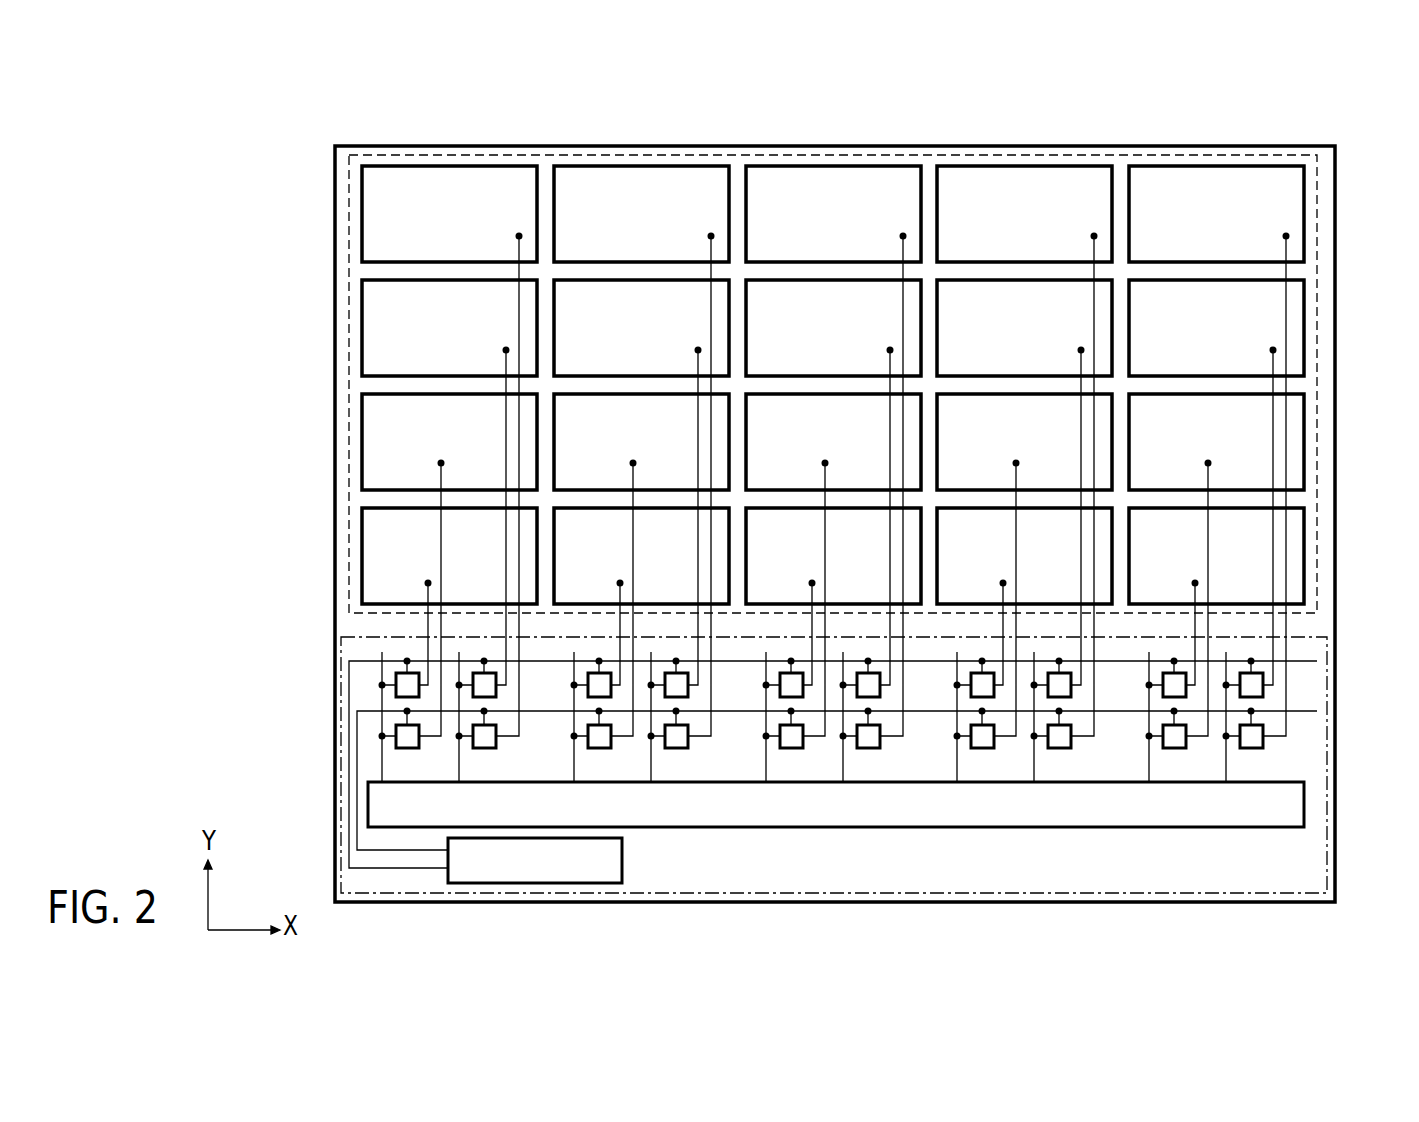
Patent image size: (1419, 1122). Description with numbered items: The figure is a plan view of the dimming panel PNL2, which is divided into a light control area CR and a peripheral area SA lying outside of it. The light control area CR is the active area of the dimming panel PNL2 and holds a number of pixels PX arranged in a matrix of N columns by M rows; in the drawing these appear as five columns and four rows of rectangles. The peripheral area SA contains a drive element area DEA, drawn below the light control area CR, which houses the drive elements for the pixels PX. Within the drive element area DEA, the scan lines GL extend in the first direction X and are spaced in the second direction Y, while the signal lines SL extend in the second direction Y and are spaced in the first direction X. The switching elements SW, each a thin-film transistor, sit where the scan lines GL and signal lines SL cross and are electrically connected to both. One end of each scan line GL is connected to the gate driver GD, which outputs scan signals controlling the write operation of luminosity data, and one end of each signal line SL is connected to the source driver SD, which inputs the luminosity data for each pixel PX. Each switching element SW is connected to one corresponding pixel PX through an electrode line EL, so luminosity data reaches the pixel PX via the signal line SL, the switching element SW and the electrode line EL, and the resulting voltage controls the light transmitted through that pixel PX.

The dimming panel PNL2 is at (1307, 126).
The light control area CR is at (1317, 185).
The pixel PX is at (362, 208).
The peripheral area SA is at (1330, 437).
The electrode line EL is at (425, 590).
The switching element SW is at (396, 694).
The signal line SL is at (385, 760).
The scan line GL is at (390, 870).
The gate driver GD is at (622, 856).
The source driver SD is at (1200, 828).
The drive element area DEA is at (1327, 818).